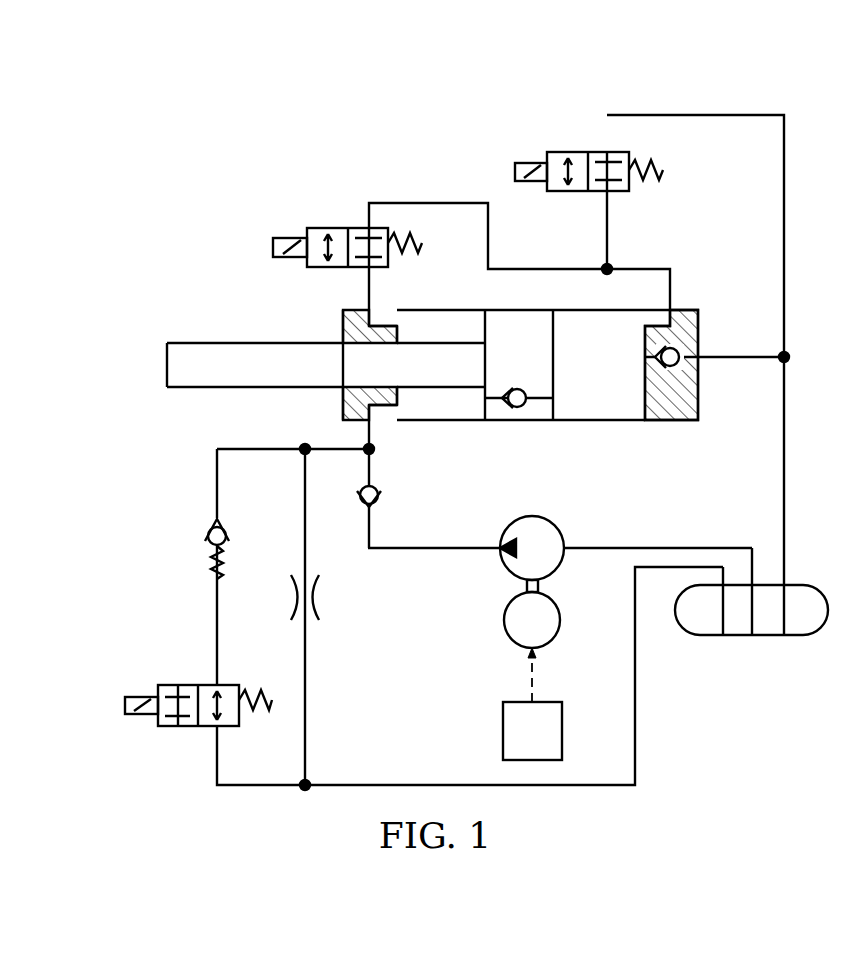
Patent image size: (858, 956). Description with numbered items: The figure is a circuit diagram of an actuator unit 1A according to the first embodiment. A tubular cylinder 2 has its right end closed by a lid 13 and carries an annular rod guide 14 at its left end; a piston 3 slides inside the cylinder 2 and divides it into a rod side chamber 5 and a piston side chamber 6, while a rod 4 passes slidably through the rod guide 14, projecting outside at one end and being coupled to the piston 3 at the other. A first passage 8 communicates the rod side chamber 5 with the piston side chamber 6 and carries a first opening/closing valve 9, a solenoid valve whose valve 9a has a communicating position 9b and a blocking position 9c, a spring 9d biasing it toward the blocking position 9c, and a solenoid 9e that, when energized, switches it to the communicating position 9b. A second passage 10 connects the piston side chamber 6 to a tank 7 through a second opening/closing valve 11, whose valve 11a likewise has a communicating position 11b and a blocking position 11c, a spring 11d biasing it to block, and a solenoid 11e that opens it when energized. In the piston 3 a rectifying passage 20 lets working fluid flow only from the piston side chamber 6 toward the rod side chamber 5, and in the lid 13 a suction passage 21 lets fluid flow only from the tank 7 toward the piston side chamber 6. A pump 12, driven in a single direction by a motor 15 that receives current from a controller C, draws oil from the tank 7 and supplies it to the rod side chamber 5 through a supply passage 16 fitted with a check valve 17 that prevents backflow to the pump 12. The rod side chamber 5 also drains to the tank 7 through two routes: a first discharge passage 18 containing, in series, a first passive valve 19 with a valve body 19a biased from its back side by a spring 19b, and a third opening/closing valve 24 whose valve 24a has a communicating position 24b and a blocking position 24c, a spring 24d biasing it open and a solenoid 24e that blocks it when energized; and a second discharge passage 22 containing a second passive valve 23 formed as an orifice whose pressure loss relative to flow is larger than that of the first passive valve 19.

The actuator unit 1A is at (215, 140).
The cylinder 2 is at (585, 420).
The piston 3 is at (495, 420).
The rod 4 is at (207, 388).
The rod side chamber 5 is at (425, 406).
The piston side chamber 6 is at (630, 398).
The tank 7 is at (795, 585).
The first passage 8 is at (405, 203).
The first opening/closing valve 9 is at (347, 252).
The valve 9a is at (307, 225).
The communicating position 9b is at (328, 228).
The blocking position 9c is at (380, 268).
The spring 9d is at (420, 243).
The solenoid 9e is at (273, 248).
The second passage 10 is at (784, 332).
The second opening/closing valve 11 is at (603, 166).
The valve 11a is at (556, 192).
The communicating position 11b is at (575, 152).
The blocking position 11c is at (620, 192).
The spring 11d is at (663, 168).
The solenoid 11e is at (520, 162).
The pump 12 is at (553, 522).
The lid 13 is at (698, 400).
The rod guide 14 is at (343, 400).
The motor 15 is at (506, 617).
The supply passage 16 is at (370, 458).
The check valve 17 is at (380, 503).
The first discharge passage 18 is at (217, 615).
The first passive valve 19 is at (168, 535).
The valve body 19a is at (205, 536).
The spring 19b is at (213, 558).
The rectifying passage 20 is at (540, 406).
The suction passage 21 is at (694, 348).
The second discharge passage 22 is at (307, 678).
The second passive valve 23 is at (322, 597).
The third opening/closing valve 24 is at (181, 725).
The valve 24a is at (160, 683).
The communicating position 24b is at (228, 685).
The blocking position 24c is at (185, 685).
The spring 24d is at (258, 714).
The solenoid 24e is at (125, 705).
The controller C is at (503, 727).